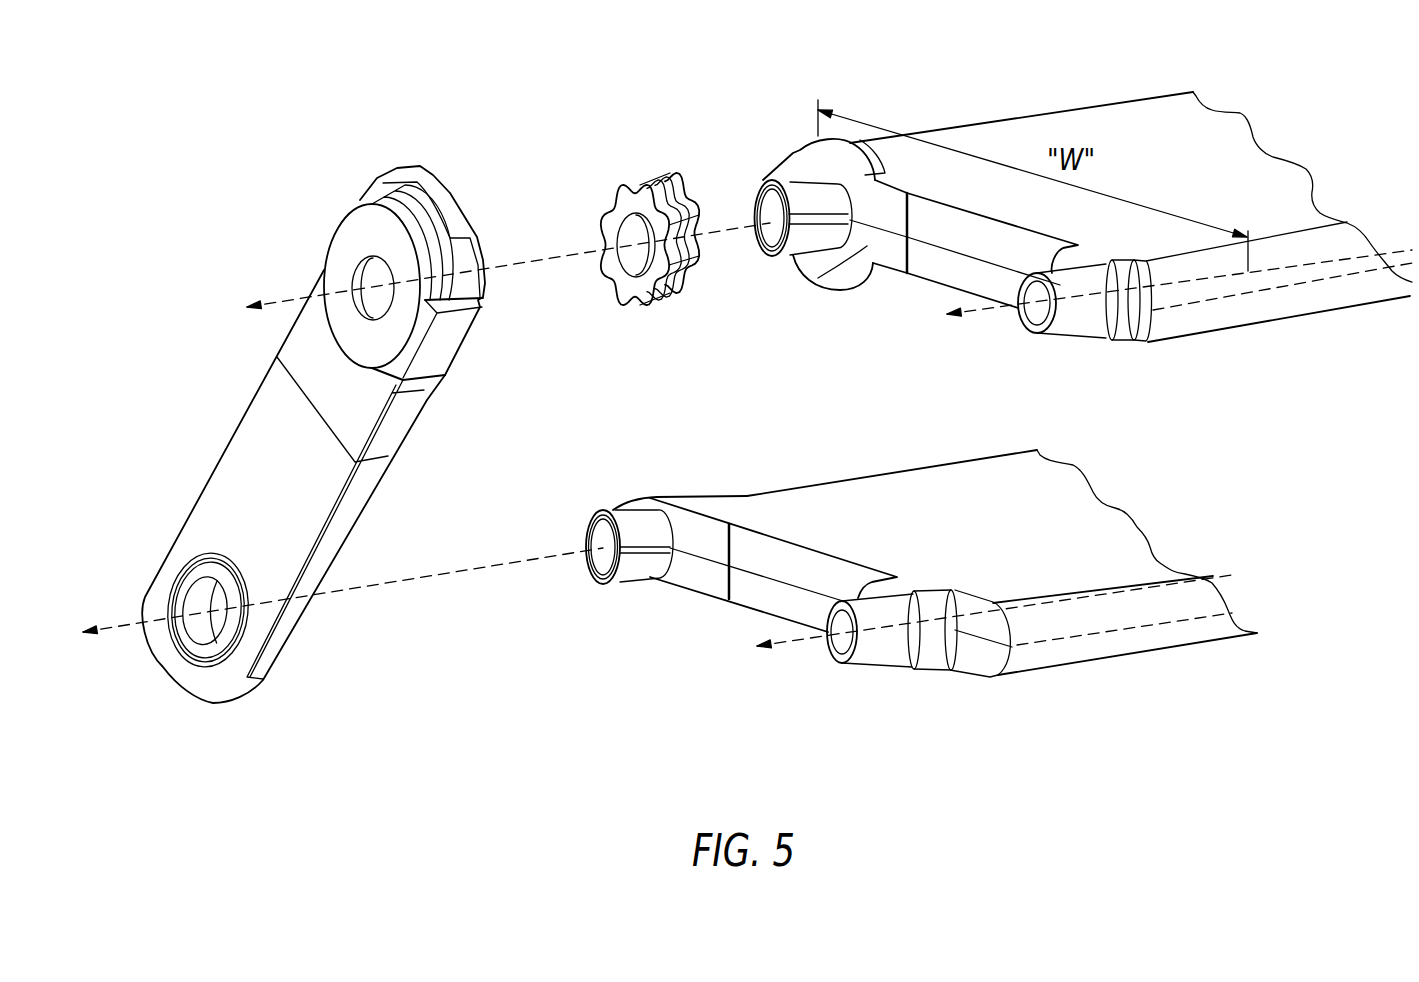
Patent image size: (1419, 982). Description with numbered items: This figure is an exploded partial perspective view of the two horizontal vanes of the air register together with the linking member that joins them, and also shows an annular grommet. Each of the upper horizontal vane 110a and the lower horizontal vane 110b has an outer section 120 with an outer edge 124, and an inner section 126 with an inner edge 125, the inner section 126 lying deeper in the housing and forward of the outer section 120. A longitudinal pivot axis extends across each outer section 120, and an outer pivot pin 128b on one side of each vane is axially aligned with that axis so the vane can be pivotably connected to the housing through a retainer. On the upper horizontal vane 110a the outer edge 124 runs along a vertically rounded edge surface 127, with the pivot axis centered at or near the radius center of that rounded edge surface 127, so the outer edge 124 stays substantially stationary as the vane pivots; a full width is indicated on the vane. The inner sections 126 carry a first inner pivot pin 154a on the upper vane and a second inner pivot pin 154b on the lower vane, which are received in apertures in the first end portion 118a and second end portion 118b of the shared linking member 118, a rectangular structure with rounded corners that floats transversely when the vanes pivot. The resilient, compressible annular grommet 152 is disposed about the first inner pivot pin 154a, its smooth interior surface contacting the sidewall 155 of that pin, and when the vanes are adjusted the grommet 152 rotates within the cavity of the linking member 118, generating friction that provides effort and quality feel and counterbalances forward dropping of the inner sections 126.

The linking member 118 is at (410, 433).
The first end portion 118a is at (380, 187).
The second end portion 118b is at (210, 682).
The annular grommet 152 is at (610, 213).
The inner edge 125 is at (755, 181).
The sidewall 155 is at (818, 198).
The first inner pivot pin 154a is at (773, 235).
The second inner pivot pin 154b is at (597, 537).
The inner section 126 is at (813, 282).
The upper horizontal vane 110a is at (925, 280).
The lower horizontal vane 110b is at (740, 600).
The outer pivot pin 128b is at (1077, 307).
The rounded edge surface 127 is at (1150, 310).
The outer section 120 is at (1290, 213).
The outer edge 124 is at (1323, 285).